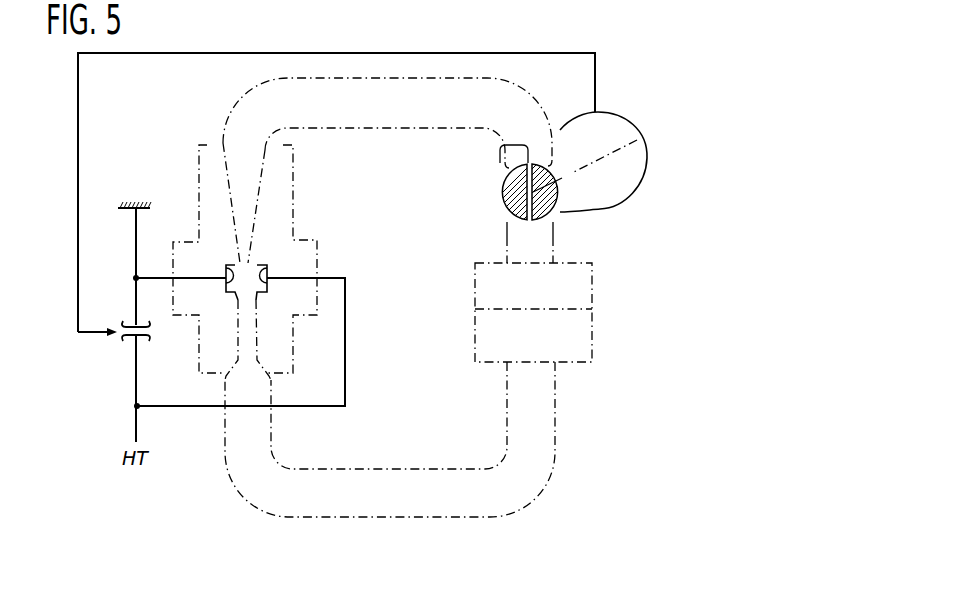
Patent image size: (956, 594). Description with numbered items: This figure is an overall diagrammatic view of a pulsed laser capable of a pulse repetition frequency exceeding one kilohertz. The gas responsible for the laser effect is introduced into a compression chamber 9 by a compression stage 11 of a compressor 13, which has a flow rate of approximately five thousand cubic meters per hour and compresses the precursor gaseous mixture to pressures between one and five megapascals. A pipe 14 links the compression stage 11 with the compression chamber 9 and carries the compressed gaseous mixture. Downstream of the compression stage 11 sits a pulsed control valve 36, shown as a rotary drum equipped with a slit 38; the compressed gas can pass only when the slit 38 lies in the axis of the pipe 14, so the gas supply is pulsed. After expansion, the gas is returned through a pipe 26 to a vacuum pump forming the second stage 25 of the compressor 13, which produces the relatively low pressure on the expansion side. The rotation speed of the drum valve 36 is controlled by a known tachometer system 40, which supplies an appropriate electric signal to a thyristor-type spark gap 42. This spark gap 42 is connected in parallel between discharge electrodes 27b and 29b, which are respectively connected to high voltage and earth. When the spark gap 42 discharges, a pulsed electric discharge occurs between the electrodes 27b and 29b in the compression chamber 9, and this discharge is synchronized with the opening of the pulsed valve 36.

The compression chamber 9 is at (227, 164).
The discharge electrode 29b is at (236, 262).
The discharge electrode 27b is at (259, 264).
The pipe 14 is at (418, 128).
The slit 38 is at (500, 154).
The pulsed control valve 36 is at (505, 208).
The tachometer system 40 is at (624, 197).
The compression stage 11 is at (533, 294).
The second stage 25 is at (530, 338).
The compressor 13 is at (544, 330).
The pipe 26 is at (390, 468).
The spark gap 42 is at (111, 342).